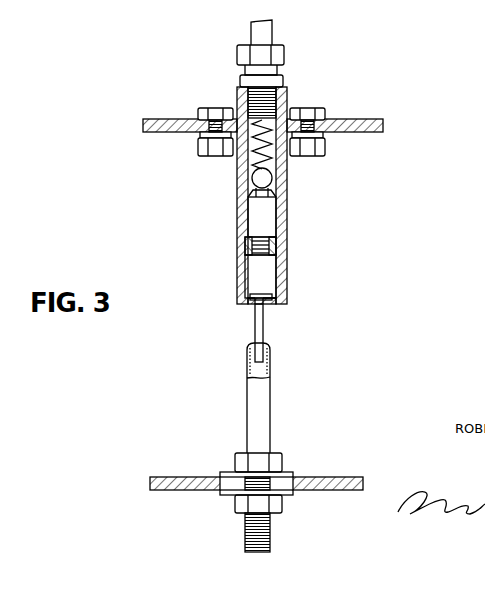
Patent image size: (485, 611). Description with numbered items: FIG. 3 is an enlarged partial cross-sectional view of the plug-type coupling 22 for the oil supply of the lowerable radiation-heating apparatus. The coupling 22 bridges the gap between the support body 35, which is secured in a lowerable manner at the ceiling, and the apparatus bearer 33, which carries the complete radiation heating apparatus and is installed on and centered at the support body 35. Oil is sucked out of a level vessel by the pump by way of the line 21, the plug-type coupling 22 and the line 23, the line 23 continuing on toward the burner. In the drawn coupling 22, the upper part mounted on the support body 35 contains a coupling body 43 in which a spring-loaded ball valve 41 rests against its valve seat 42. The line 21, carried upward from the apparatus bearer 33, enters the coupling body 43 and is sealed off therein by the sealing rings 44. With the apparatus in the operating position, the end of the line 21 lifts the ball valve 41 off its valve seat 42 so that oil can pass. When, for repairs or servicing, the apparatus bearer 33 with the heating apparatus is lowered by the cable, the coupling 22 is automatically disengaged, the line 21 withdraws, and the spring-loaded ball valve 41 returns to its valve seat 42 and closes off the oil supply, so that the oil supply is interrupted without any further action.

The line 21 is at (250, 403).
The plug-type coupling 22 is at (235, 218).
The line 23 is at (240, 80).
The apparatus bearer 33 is at (195, 478).
The support body 35 is at (170, 118).
The spring-loaded ball valve 41 is at (270, 176).
The valve seat 42 is at (254, 189).
The coupling body 43 is at (278, 213).
The sealing rings 44 is at (277, 241).